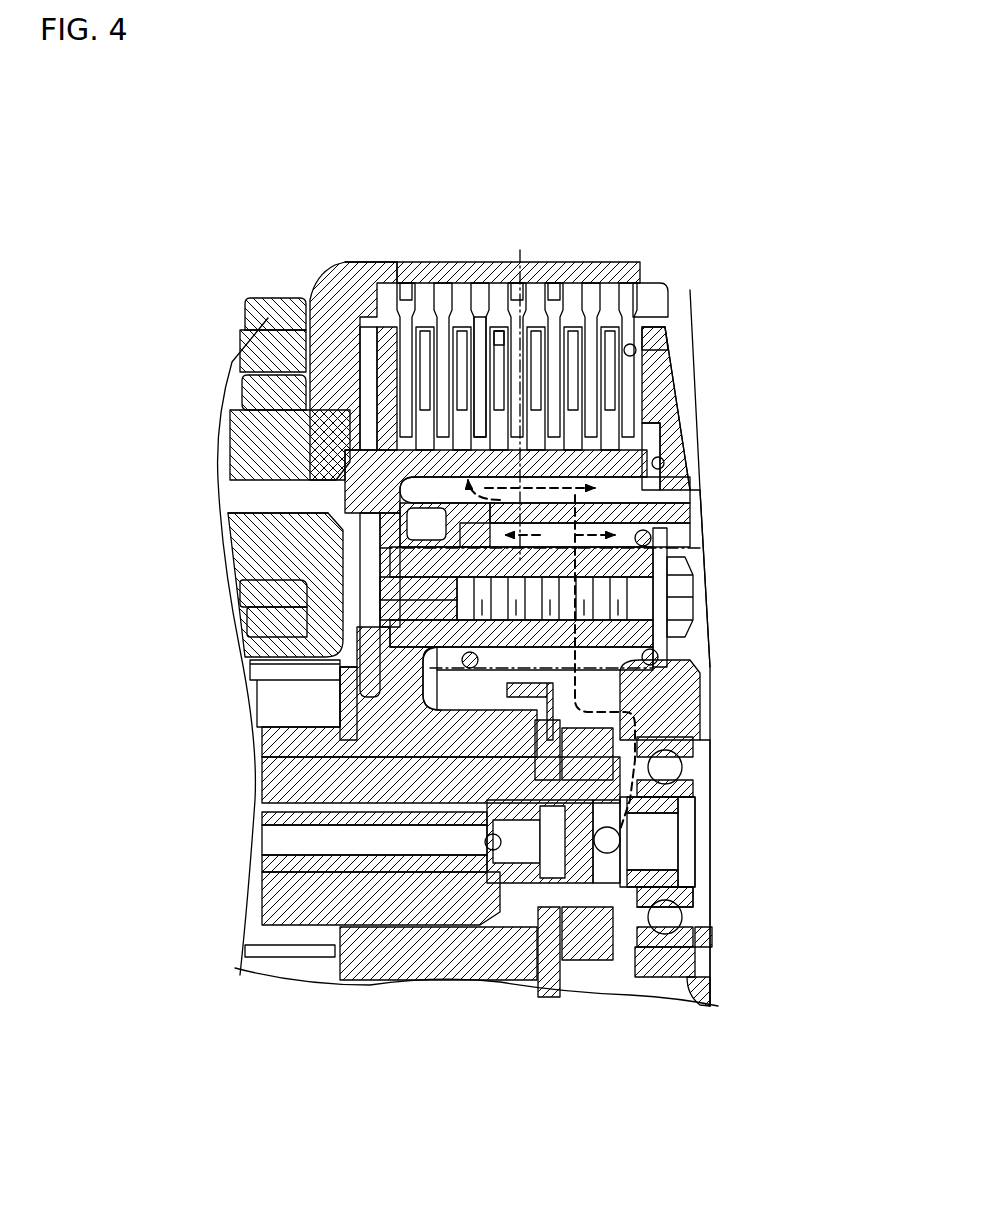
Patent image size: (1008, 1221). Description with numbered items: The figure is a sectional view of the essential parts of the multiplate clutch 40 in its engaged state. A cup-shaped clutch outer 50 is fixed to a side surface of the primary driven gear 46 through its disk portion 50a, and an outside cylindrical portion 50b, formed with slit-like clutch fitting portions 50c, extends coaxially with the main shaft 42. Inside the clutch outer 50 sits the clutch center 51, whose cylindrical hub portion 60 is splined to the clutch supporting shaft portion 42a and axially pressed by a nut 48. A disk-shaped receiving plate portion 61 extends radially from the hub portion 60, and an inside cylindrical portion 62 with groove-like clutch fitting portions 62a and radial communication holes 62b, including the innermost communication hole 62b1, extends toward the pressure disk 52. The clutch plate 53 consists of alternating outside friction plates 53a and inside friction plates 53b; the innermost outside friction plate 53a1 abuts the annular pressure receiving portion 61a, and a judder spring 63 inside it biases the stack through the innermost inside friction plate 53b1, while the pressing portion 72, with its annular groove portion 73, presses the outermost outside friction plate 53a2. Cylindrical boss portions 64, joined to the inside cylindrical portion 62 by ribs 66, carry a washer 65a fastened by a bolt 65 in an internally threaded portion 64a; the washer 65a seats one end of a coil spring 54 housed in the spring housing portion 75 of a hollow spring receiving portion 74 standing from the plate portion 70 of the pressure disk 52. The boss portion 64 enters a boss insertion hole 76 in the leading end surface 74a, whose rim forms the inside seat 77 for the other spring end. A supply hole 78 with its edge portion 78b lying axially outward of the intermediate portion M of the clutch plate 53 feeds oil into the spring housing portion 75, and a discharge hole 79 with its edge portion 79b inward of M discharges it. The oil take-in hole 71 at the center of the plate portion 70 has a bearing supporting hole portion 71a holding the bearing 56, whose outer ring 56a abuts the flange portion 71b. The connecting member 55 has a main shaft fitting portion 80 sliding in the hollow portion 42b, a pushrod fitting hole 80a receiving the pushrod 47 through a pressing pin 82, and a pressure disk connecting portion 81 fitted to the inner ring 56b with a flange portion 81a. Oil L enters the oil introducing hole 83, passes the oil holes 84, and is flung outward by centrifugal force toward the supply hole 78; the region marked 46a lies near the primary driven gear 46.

The multiplate clutch 40 is at (722, 302).
The main shaft 42 is at (256, 916).
The clutch supporting shaft portion 42a is at (277, 870).
The hollow portion 42b is at (272, 840).
The primary driven gear 46 is at (278, 312).
The bearing inner portion 46a is at (258, 950).
The pushrod 47 is at (300, 817).
The nut 48 is at (693, 978).
The clutch outer 50 is at (385, 262).
The disk portion 50a is at (392, 580).
The outside cylindrical portion 50b is at (552, 300).
The clutch fitting portions 50c is at (517, 280).
The clutch center 51 is at (368, 420).
The pressure disk 52 is at (692, 437).
The clutch plate 53 is at (660, 300).
The outside friction plates 53a is at (480, 290).
The innermost outside friction plate 53a1 is at (350, 262).
The outermost outside friction plate 53a2 is at (648, 285).
The inside friction plates 53b is at (478, 300).
The innermost inside friction plate 53b1 is at (406, 285).
The coil springs 54 is at (662, 510).
The connecting member 55 is at (668, 920).
The bearing 56 is at (700, 912).
The outer ring 56a is at (688, 942).
The inner ring 56b is at (668, 897).
The hub portion 60 is at (380, 722).
The receiving plate portion 61 is at (360, 432).
The pressure receiving portion 61a is at (345, 375).
The inside cylindrical portion 62 is at (645, 470).
The clutch fitting portions 62a is at (630, 440).
The communication holes 62b is at (610, 330).
The innermost communication hole 62b1 is at (499, 333).
The judder spring 63 is at (365, 385).
The boss portions 64 is at (628, 632).
The internally threaded portion 64a is at (642, 615).
The bolt 65 is at (692, 585).
The washer 65a is at (662, 547).
The ribs 66 is at (425, 540).
The plate portion 70 is at (690, 462).
The oil take-in hole 71 is at (705, 782).
The bearing supporting hole portion 71a is at (690, 762).
The flange portion 71b is at (685, 937).
The pressing portion 72 is at (636, 350).
The groove portion 73 is at (664, 464).
The spring receiving portions 74 is at (420, 600).
The leading end surface 74a is at (400, 640).
The spring housing portion 75 is at (690, 660).
The boss insertion hole 76 is at (425, 682).
The inside seat 77 is at (395, 550).
The supply hole 78 is at (628, 690).
The edge portion 78b is at (602, 722).
The discharge hole 79 is at (405, 492).
The edge portion 79b is at (365, 472).
The main shaft fitting portion 80 is at (550, 930).
The pushrod fitting hole 80a is at (495, 850).
The pressure disk connecting portion 81 is at (692, 862).
The flange portion 81a is at (670, 884).
The pressing pin 82 is at (578, 910).
The oil introducing hole 83 is at (670, 850).
The oil holes 84 is at (620, 840).
The oil L is at (640, 600).
The intermediate portion M is at (521, 270).